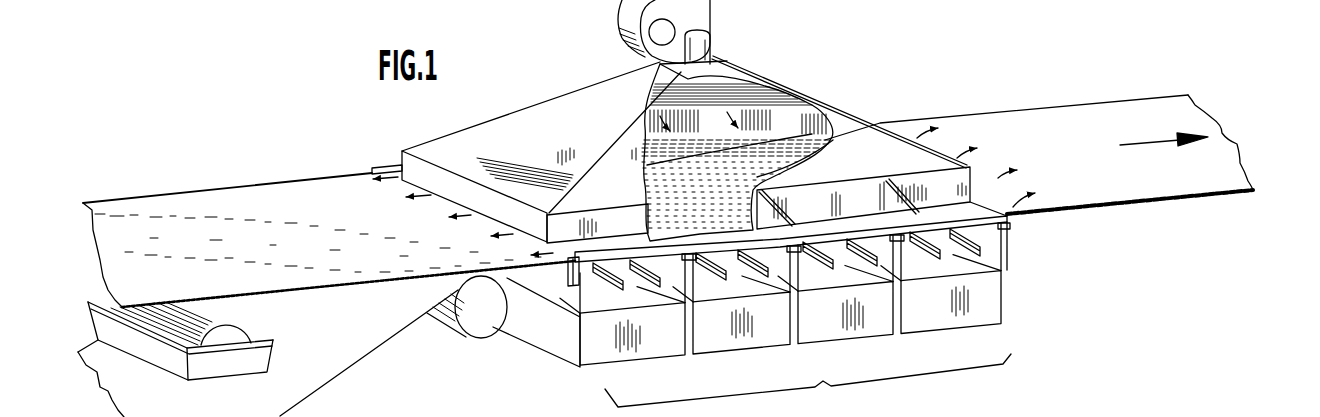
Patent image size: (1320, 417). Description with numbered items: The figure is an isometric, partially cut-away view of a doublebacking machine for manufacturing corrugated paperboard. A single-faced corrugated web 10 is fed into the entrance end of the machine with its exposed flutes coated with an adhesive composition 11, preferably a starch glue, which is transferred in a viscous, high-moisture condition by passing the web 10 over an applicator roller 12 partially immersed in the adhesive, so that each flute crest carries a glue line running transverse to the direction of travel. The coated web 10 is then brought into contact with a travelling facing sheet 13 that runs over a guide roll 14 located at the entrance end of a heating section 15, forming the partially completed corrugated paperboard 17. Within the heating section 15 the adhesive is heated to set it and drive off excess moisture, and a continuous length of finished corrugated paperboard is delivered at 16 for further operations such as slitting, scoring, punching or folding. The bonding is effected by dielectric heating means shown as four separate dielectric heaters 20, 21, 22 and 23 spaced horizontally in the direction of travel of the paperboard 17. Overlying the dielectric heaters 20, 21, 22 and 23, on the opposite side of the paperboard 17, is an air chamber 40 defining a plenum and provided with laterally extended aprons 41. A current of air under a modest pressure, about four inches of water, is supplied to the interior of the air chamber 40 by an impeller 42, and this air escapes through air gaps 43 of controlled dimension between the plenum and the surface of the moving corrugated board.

The single-faced corrugated web 10 is at (207, 210).
The adhesive composition 11 is at (187, 349).
The applicator roller 12 is at (222, 333).
The travelling facing sheet 13 is at (360, 339).
The guide roll 14 is at (480, 318).
The heating section 15 is at (808, 385).
The delivery point 16 is at (1010, 226).
The partially completed corrugated paperboard 17 is at (878, 128).
The dielectric heater 20 is at (636, 369).
The dielectric heater 21 is at (736, 358).
The dielectric heater 22 is at (845, 344).
The dielectric heater 23 is at (957, 332).
The air chamber 40 is at (498, 134).
The laterally extended aprons 41 is at (572, 262).
The impeller 42 is at (710, 22).
The air gaps 43 is at (370, 173).